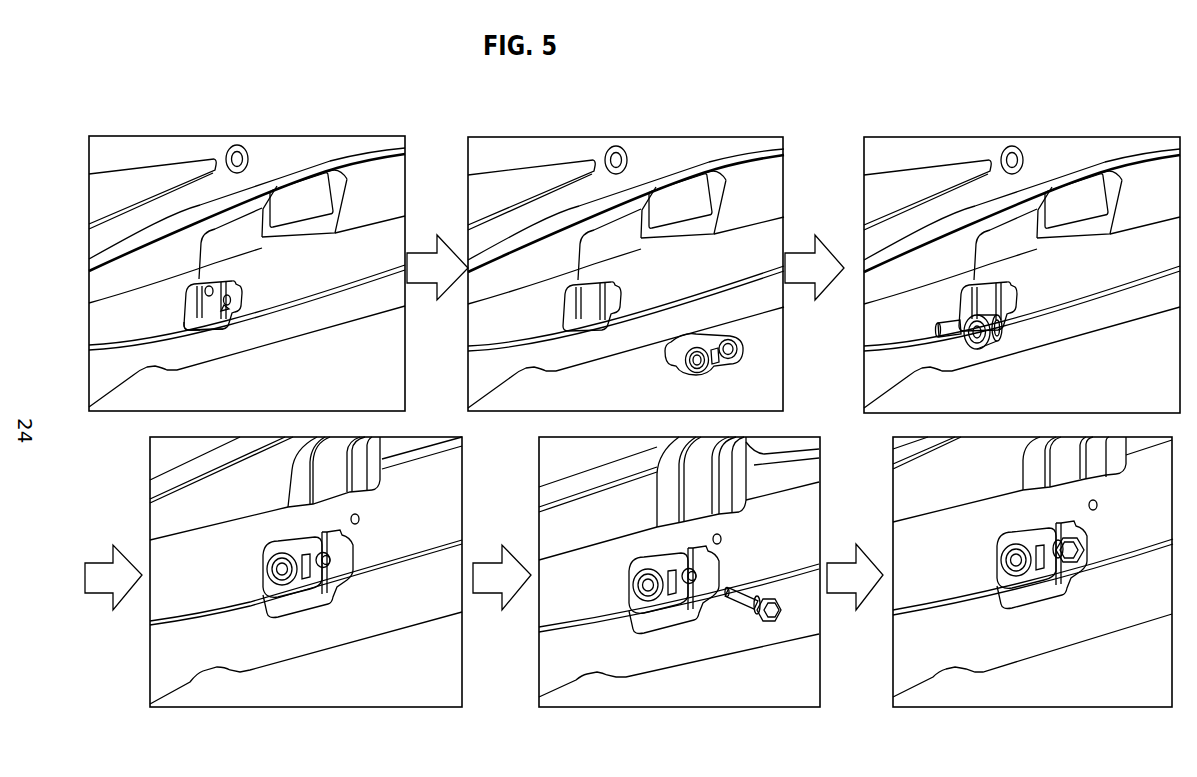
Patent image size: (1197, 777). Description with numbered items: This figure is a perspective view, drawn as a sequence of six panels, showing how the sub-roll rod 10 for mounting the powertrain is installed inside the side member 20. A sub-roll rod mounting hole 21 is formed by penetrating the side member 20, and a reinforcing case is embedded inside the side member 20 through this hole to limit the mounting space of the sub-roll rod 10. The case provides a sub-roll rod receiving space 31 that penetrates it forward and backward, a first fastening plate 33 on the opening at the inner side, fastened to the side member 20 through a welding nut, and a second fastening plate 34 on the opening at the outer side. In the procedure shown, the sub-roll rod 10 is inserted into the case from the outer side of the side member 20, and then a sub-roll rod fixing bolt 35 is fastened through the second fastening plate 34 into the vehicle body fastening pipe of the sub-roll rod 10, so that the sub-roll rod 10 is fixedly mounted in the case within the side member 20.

The sub-roll rod 10 is at (723, 375).
The side member 20 is at (341, 323).
The sub-roll rod mounting hole 21 is at (200, 333).
The sub-roll rod receiving space 31 is at (207, 330).
The first fastening plate 33 is at (232, 305).
The second fastening plate 34 is at (225, 307).
The sub-roll rod fixing bolt 35 is at (777, 620).